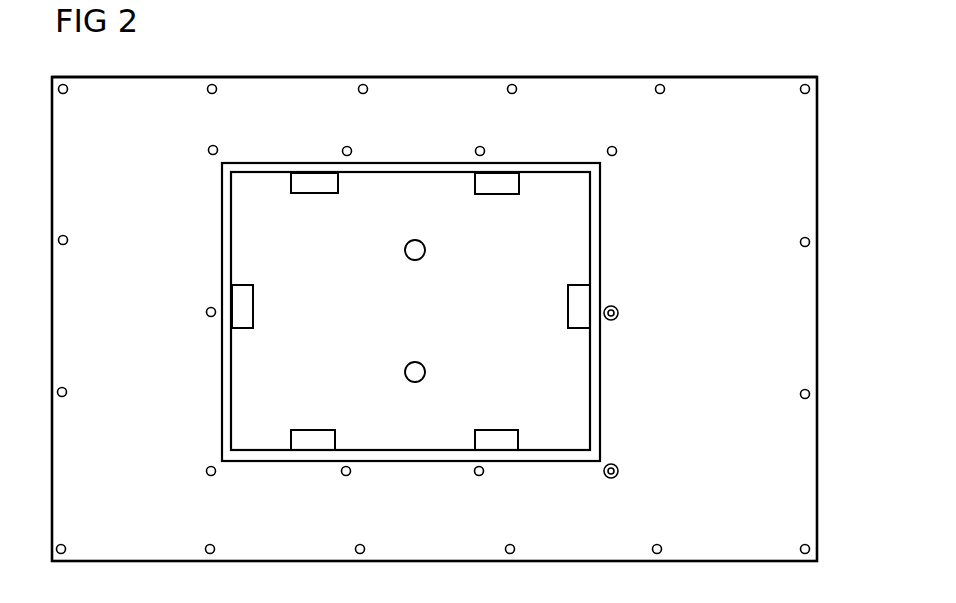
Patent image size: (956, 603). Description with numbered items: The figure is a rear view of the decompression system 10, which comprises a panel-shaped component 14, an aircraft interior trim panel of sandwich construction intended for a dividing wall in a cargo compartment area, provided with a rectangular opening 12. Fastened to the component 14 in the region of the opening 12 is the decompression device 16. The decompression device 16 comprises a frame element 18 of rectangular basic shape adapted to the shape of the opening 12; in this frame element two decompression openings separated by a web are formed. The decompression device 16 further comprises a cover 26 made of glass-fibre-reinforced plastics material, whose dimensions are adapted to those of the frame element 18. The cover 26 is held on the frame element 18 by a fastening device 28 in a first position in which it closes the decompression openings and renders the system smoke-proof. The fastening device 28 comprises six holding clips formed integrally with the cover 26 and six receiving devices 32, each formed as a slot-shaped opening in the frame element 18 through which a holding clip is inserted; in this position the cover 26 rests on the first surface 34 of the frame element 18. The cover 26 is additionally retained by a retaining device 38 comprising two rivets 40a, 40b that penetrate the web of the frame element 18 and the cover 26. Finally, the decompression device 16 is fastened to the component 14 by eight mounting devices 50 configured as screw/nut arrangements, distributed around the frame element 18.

The decompression system 10 is at (748, 62).
The opening 12 is at (392, 180).
The component 14 is at (292, 86).
The decompression device 16 is at (645, 213).
The frame element 18 is at (238, 300).
The cover 26 is at (426, 185).
The fastening device 28 is at (470, 475).
The receiving device 32 is at (312, 196).
The first surface 34 is at (506, 186).
The retaining device 38 is at (432, 262).
The rivet 40a is at (412, 261).
The rivet 40b is at (414, 383).
The mounting device 50 is at (208, 152).